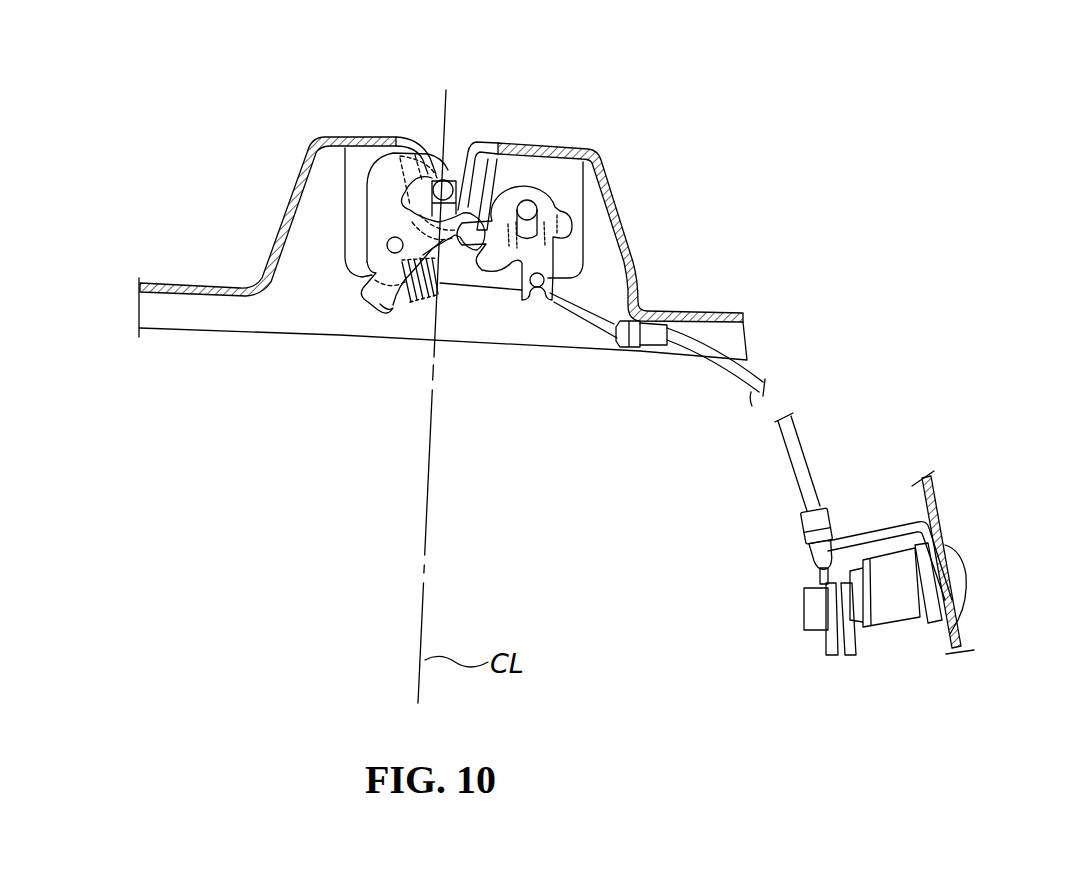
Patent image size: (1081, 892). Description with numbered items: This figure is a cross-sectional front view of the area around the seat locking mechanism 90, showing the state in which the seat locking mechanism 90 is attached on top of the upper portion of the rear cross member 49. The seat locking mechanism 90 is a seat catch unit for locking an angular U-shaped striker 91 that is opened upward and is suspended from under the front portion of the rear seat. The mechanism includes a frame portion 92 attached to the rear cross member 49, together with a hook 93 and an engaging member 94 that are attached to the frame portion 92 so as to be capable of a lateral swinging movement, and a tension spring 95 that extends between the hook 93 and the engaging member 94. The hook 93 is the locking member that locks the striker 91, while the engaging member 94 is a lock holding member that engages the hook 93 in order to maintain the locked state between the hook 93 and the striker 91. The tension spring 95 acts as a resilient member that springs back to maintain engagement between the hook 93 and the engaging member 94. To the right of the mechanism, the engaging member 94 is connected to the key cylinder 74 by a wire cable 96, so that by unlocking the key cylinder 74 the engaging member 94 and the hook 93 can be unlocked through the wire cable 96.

The rear cross member 49 is at (195, 320).
The key cylinder 74 is at (967, 577).
The seat locking mechanism 90 is at (651, 107).
The striker 91 is at (440, 178).
The frame portion 92 is at (350, 182).
The hook 93 is at (380, 221).
The engaging member 94 is at (545, 258).
The tension spring 95 is at (440, 283).
The wire cable 96 is at (802, 437).